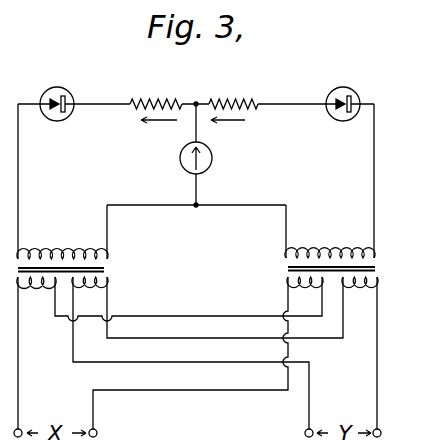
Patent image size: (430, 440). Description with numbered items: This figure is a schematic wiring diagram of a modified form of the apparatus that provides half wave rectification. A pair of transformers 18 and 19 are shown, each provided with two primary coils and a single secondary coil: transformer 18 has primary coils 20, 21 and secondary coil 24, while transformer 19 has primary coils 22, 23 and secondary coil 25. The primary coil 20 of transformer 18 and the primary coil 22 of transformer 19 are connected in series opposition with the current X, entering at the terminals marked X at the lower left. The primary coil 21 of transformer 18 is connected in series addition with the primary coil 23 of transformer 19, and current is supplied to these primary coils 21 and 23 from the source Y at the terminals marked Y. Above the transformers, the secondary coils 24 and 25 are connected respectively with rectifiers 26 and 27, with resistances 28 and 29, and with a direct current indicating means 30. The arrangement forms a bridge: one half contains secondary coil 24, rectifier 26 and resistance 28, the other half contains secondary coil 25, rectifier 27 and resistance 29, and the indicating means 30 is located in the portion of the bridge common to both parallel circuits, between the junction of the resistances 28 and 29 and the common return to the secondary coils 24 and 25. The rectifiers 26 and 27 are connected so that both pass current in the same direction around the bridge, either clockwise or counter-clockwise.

The transformer 18 is at (110, 268).
The transformer 19 is at (384, 266).
The primary coil 20 is at (36, 296).
The primary coil 21 is at (90, 296).
The primary coil 22 is at (305, 295).
The primary coil 23 is at (360, 295).
The secondary coil 24 is at (57, 248).
The secondary coil 25 is at (333, 247).
The rectifier 26 is at (57, 86).
The rectifier 27 is at (343, 87).
The resistance 28 is at (167, 98).
The resistance 29 is at (248, 98).
The direct current indicating means 30 is at (214, 158).